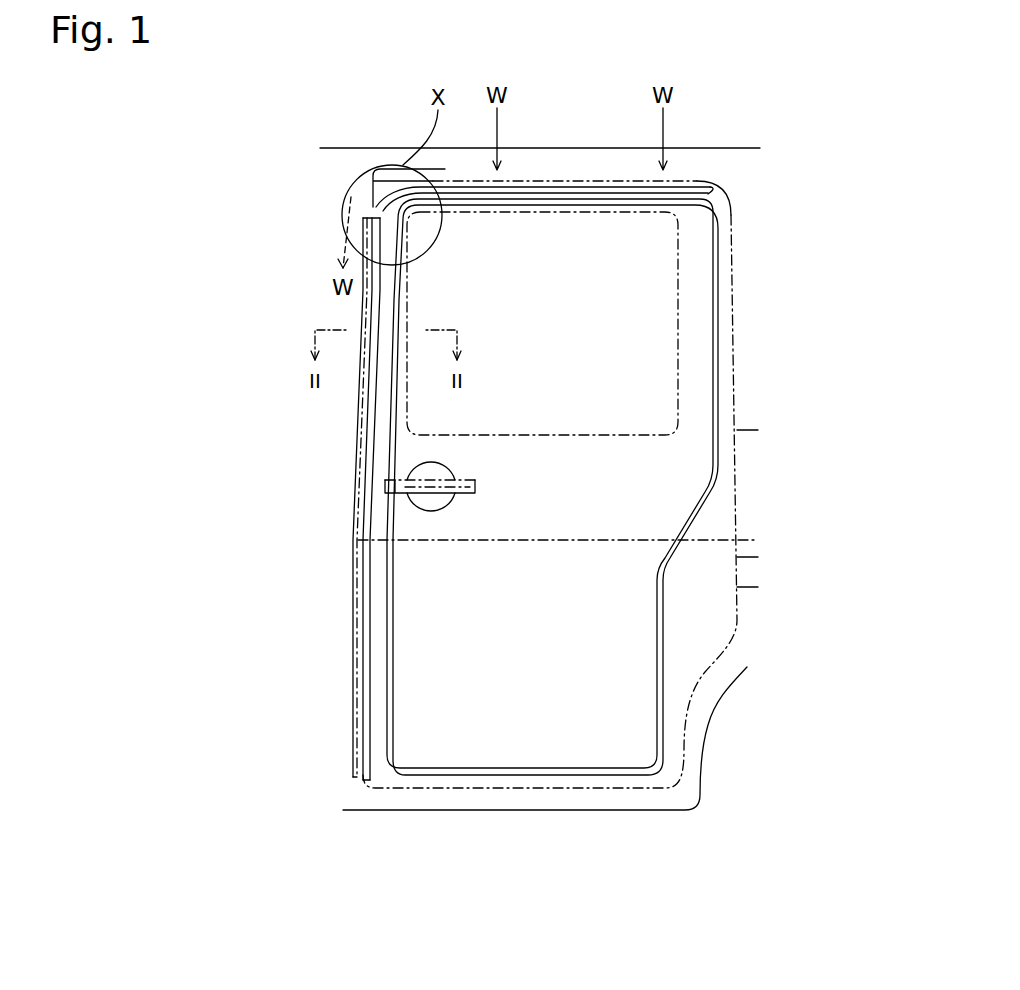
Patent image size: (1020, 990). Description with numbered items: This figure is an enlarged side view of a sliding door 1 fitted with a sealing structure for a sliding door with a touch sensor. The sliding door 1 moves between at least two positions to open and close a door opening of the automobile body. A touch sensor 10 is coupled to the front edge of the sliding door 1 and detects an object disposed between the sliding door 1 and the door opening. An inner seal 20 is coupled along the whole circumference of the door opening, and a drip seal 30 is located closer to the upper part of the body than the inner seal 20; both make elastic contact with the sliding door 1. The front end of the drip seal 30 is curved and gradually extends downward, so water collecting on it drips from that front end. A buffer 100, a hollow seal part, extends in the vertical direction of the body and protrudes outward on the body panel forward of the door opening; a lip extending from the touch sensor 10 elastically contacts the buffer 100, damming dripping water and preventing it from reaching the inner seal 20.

The sliding door 1 is at (503, 737).
The touch sensor 10 is at (355, 480).
The inner seal 20 is at (718, 367).
The drip seal 30 is at (577, 188).
The buffer 100 is at (368, 515).